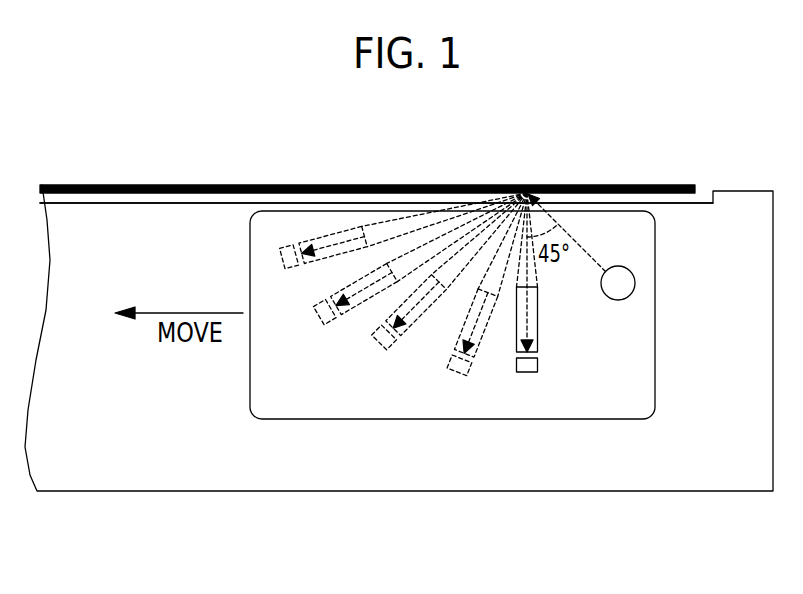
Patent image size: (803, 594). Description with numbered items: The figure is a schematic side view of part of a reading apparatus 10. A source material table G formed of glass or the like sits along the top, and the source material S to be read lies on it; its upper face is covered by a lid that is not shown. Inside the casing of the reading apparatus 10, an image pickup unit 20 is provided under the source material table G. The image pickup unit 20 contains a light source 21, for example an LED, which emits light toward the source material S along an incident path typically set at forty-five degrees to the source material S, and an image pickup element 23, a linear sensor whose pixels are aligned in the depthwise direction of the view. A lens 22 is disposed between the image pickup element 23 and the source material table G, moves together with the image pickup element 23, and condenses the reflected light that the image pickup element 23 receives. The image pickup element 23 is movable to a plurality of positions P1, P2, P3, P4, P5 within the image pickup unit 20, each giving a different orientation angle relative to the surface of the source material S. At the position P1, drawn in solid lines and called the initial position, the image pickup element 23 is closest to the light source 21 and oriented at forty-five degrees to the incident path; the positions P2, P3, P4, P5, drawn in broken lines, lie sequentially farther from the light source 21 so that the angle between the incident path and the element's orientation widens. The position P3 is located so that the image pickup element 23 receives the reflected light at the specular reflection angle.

The reading apparatus 10 is at (505, 491).
The image pickup unit 20 is at (655, 369).
The light source 21 is at (635, 283).
The lens 22 is at (538, 323).
The image pickup element 23 is at (538, 365).
The source material S is at (553, 184).
The source material table G is at (110, 203).
The position P1 is at (552, 302).
The position P2 is at (466, 406).
The position P3 is at (377, 372).
The position P4 is at (317, 339).
The position P5 is at (291, 307).